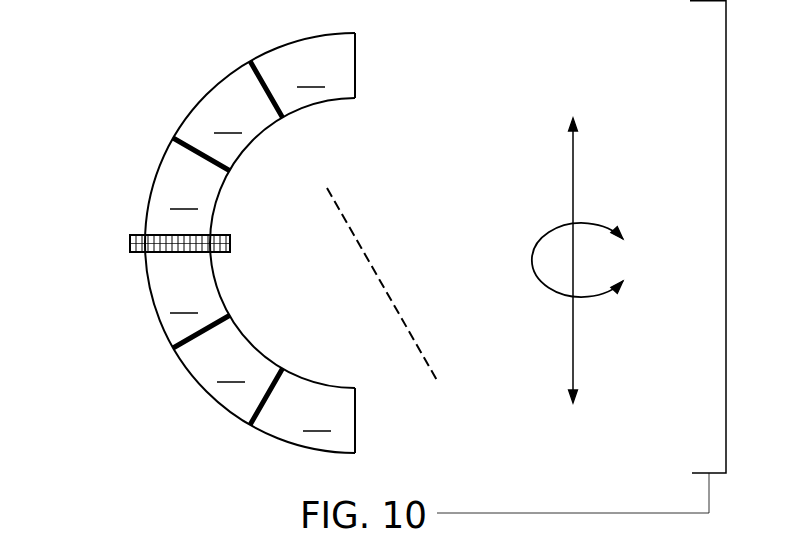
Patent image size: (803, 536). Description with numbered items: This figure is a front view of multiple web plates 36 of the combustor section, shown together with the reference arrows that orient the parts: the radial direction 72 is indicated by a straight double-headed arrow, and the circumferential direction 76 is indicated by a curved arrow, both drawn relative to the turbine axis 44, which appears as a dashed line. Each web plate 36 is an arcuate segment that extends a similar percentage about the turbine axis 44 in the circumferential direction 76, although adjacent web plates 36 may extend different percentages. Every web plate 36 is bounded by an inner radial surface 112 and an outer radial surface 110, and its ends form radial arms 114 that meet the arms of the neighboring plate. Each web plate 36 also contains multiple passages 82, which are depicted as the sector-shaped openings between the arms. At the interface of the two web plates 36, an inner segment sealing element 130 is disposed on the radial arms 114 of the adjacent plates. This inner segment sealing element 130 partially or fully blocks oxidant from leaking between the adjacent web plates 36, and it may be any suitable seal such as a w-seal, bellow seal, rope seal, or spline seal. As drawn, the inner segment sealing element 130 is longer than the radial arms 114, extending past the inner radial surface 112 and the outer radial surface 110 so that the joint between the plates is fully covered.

The web plate 36 is at (199, 244).
The turbine axis 44 is at (382, 283).
The radial direction 72 is at (575, 163).
The circumferential direction 76 is at (555, 228).
The passage 82 is at (250, 247).
The outer radial surface 110 is at (140, 170).
The inner radial surface 112 is at (264, 152).
The radial arm 114 is at (267, 92).
The inner segment sealing element 130 is at (130, 245).